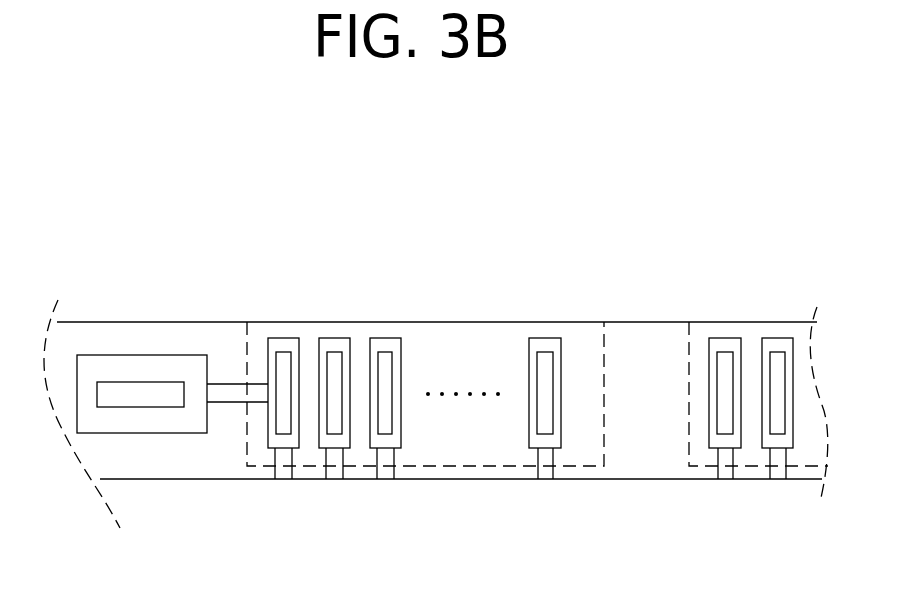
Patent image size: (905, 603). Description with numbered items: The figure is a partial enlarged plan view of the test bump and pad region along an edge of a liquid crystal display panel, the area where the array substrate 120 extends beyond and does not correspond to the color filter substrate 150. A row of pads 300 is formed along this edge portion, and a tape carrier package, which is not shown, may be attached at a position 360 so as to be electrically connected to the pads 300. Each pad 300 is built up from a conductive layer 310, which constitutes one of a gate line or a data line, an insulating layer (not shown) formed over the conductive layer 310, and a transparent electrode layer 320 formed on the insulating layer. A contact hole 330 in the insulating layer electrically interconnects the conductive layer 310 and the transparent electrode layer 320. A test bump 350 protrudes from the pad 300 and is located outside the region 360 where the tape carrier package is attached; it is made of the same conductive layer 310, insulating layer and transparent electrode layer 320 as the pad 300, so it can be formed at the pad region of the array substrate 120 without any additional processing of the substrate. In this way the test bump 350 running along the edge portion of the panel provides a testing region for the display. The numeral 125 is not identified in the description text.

The array substrate 120 is at (770, 322).
The base layer 125 is at (183, 465).
The color filter substrate 150 is at (687, 482).
The pad 300 is at (565, 377).
The conductive layer 310 is at (223, 383).
The transparent electrode layer 320 is at (183, 357).
The contact hole 330 is at (142, 392).
The test bump 350 is at (343, 401).
The TCP attachment position 360 is at (577, 468).